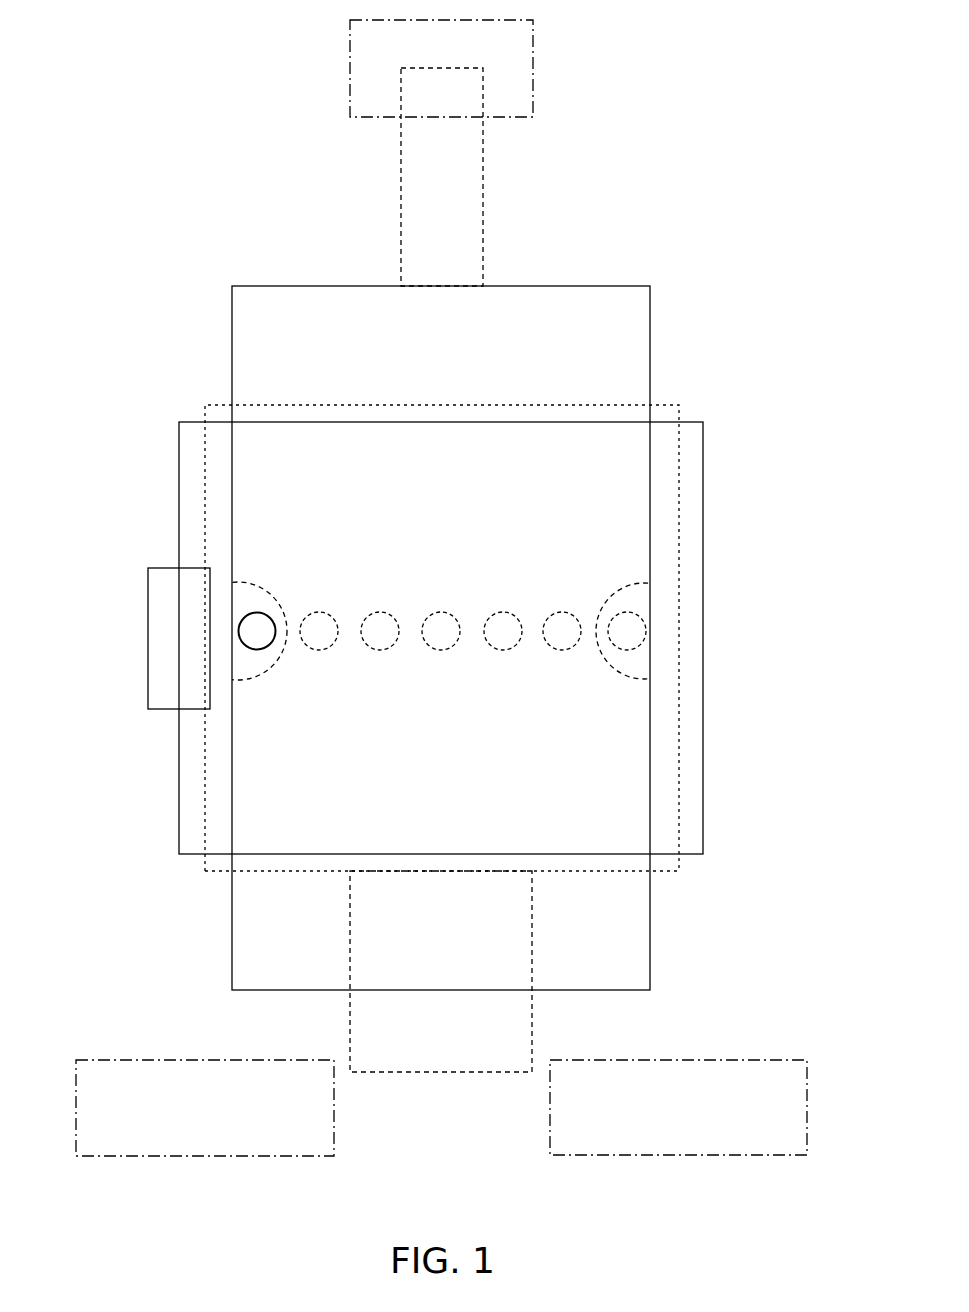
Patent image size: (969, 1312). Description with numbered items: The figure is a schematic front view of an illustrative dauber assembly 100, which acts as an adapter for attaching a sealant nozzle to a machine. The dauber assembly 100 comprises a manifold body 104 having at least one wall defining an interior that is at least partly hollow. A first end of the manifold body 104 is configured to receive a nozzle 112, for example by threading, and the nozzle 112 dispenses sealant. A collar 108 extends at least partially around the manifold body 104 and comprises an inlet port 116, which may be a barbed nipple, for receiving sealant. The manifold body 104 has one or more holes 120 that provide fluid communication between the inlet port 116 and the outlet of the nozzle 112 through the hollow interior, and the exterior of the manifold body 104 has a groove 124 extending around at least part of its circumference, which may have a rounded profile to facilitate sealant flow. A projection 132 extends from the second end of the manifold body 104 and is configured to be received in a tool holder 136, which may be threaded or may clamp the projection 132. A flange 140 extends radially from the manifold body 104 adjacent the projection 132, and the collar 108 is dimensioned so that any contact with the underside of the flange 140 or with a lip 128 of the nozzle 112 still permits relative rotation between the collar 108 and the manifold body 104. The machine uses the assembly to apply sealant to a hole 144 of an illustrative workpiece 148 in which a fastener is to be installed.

The dauber assembly 100 is at (150, 47).
The manifold body 104 is at (567, 302).
The collar 108 is at (690, 462).
The nozzle 112 is at (520, 1035).
The inlet port 116 is at (160, 582).
The holes 120 is at (262, 622).
The groove 124 is at (262, 656).
The lip 128 is at (680, 873).
The projection 132 is at (483, 207).
The tool holder 136 is at (533, 92).
The flange 140 is at (669, 405).
The hole 144 is at (548, 1120).
The workpiece 148 is at (703, 1080).